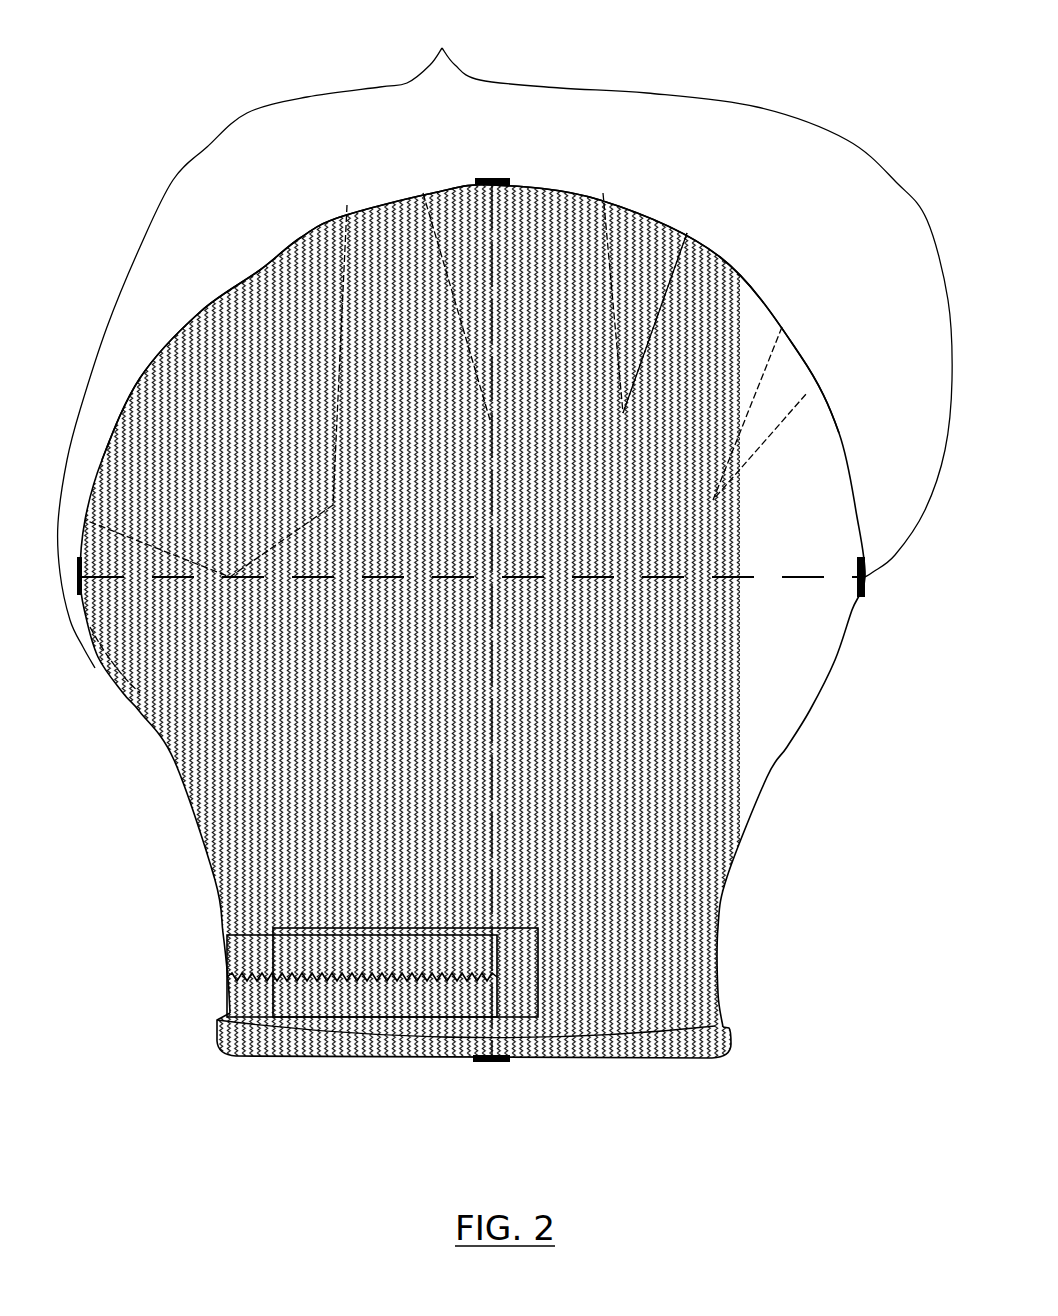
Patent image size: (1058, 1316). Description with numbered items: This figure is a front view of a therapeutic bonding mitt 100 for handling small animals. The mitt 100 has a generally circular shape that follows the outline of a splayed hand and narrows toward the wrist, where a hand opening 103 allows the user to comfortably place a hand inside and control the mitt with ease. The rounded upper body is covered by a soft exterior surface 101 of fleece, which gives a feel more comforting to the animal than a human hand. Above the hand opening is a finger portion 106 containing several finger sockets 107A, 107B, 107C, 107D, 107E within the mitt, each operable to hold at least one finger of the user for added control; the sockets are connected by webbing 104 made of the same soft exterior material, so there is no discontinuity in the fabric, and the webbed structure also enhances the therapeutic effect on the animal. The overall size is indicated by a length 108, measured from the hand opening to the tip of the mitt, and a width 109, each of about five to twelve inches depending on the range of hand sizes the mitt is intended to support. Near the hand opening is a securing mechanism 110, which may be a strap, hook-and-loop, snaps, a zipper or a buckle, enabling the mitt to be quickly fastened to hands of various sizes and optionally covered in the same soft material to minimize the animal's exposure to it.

The therapeutic bonding mitt 100 is at (670, 183).
The soft exterior surface 101 is at (740, 790).
The hand opening 103 is at (278, 1053).
The webbing 104 is at (222, 370).
The finger portion 106 is at (505, 337).
The finger socket 107A is at (105, 622).
The finger socket 107B is at (382, 248).
The finger socket 107C is at (578, 220).
The finger socket 107D is at (737, 295).
The finger socket 107E is at (830, 448).
The length 108 is at (497, 773).
The width 109 is at (788, 578).
The securing mechanism 110 is at (253, 951).